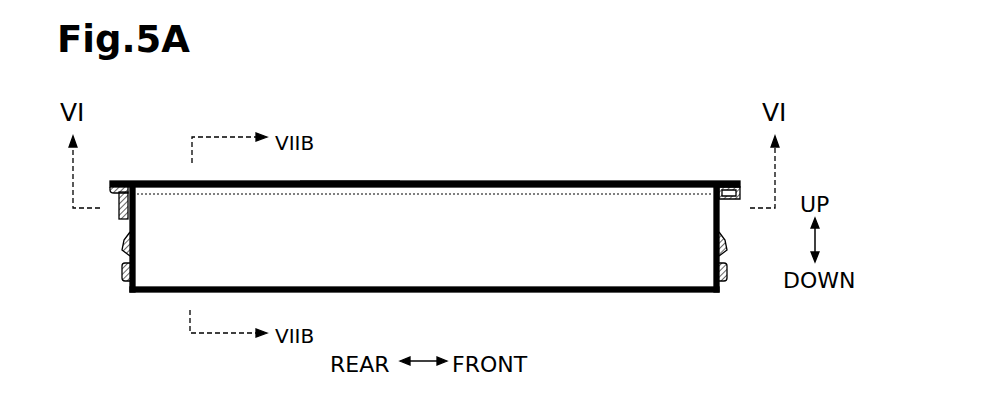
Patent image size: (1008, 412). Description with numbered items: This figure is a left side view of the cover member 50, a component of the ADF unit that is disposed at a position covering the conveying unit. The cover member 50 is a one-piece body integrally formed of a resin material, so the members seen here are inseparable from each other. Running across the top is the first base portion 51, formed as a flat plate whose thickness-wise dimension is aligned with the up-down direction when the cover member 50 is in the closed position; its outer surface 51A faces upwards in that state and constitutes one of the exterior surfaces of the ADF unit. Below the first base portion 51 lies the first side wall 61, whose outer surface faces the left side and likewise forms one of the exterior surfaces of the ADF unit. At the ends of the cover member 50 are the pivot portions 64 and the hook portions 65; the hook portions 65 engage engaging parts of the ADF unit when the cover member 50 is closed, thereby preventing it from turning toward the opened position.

The cover member 50 is at (617, 156).
The first base portion 51 is at (506, 181).
The outer surface 51A is at (344, 181).
The first side wall 61 is at (563, 292).
The pivot portions 64 is at (122, 280).
The hook portions 65 is at (126, 242).